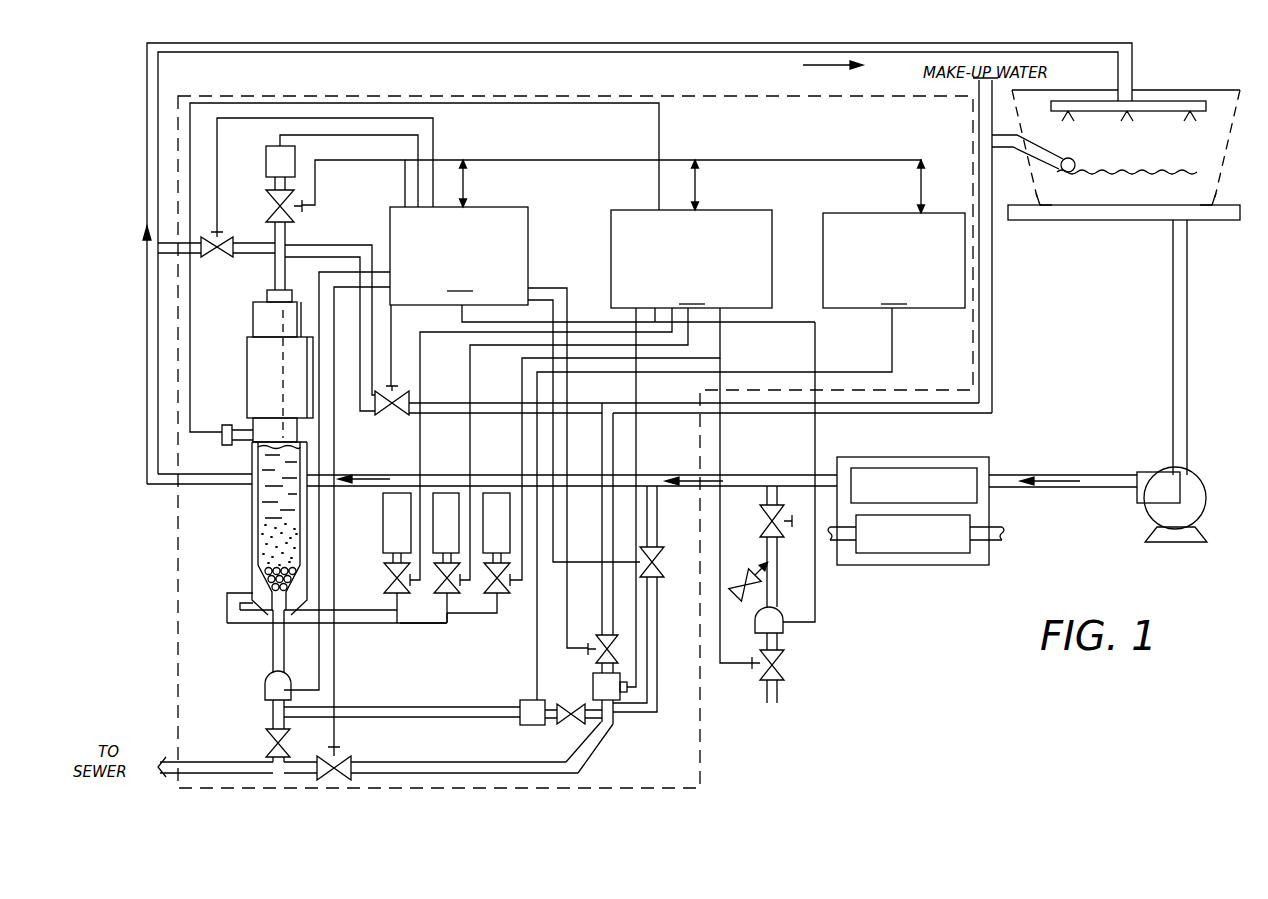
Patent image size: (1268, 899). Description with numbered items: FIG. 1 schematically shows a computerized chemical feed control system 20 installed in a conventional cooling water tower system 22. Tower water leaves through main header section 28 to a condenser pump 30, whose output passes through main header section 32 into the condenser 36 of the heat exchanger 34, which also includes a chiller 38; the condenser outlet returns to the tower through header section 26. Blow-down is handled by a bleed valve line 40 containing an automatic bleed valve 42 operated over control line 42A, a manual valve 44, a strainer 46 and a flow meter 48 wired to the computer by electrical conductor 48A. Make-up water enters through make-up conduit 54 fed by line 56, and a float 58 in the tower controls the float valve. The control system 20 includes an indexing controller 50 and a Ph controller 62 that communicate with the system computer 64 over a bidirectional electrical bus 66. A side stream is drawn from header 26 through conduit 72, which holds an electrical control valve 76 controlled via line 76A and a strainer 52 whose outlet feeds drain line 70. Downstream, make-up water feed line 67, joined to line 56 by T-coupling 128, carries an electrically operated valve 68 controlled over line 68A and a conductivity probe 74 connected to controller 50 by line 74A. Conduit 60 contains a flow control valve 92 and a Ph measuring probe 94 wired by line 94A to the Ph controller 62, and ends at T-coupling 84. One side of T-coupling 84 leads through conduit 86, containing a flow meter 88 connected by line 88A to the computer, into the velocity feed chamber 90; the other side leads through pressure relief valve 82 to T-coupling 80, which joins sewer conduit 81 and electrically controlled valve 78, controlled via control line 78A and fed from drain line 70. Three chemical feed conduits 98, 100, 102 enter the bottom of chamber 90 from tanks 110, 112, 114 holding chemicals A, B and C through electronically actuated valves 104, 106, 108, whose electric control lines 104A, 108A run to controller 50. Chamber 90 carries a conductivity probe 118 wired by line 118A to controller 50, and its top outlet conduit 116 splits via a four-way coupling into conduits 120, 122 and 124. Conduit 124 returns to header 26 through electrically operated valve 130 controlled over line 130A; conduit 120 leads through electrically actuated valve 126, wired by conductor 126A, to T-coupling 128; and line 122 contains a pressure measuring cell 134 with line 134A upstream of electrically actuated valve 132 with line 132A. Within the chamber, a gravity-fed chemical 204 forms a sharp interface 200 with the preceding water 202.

The computerized chemical feed control system 20 is at (826, 137).
The cooling water tower system 22 is at (1175, 96).
The header section 26 is at (724, 54).
The main header section 28 is at (1190, 336).
The condenser pump 30 is at (1200, 506).
The main header section 32 is at (1117, 488).
The heat exchanger 34 is at (915, 456).
The condenser 36 is at (978, 464).
The chiller 38 is at (967, 554).
The bleed valve line 40 is at (761, 521).
The automatic bleed valve 42 is at (768, 704).
The control line 42A is at (734, 664).
The manual valve 44 is at (790, 524).
The strainer 46 is at (760, 566).
The flow meter 48 is at (781, 632).
The electrical conductor 48A is at (816, 616).
The indexing controller 50 is at (691, 259).
The strainer 52 is at (623, 722).
The make-up conduit 54 is at (1052, 160).
The make-up water line 56 is at (993, 270).
The float 58 is at (1076, 167).
The conduit 60 is at (413, 718).
The Ph controller 62 is at (894, 260).
The system computer 64 is at (602, 396).
The bidirectional electrical bus 66 is at (809, 163).
The make-up water feed line 67 is at (600, 535).
The electrically operated valve 68 is at (598, 640).
The control line 68A is at (594, 655).
The drain line 70 is at (599, 757).
The conduit 72 is at (655, 700).
The conductivity probe 74 is at (593, 689).
The line 74A is at (637, 448).
The electrical control valve 76 is at (660, 577).
The line 76A is at (553, 463).
The electrically controlled valve 78 is at (342, 760).
The control line 78A is at (335, 690).
The T-coupling 80 is at (300, 761).
The conduit 81 is at (195, 758).
The pressure relief valve 82 is at (265, 748).
The T-coupling 84 is at (270, 710).
The conduit 86 is at (273, 639).
The flow meter 88 is at (266, 677).
The line 88A is at (320, 652).
The velocity feed chamber 90 is at (257, 352).
The flow control valve 92 is at (557, 728).
The Ph measuring probe 94 is at (515, 718).
The line 94A is at (534, 676).
The chemical feed conduit 98 is at (450, 632).
The chemical feed conduit 100 is at (427, 625).
The chemical feed conduit 102 is at (360, 613).
The electronically actuated valve 104 is at (496, 603).
The electric control line 104A is at (700, 358).
The electronically actuated valve 106 is at (446, 600).
The electronically actuated valve 108 is at (394, 562).
The electric control line 108A is at (660, 326).
The tank 110 is at (497, 493).
The chemical tank 112 is at (447, 493).
The tank 114 is at (387, 510).
The outlet conduit 116 is at (268, 294).
The conductivity probe 118 is at (240, 426).
The line 118A is at (190, 375).
The conduit 120 is at (333, 247).
The conduit 122 is at (289, 230).
The conduit 124 is at (247, 262).
The electrically actuated valve 126 is at (397, 418).
The electrical conductor 126A is at (385, 390).
The T-coupling 128 is at (617, 393).
The electrically operated valve 130 is at (228, 259).
The line 130A is at (216, 126).
The electrically actuated valve 132 is at (268, 218).
The electrical line 132A is at (316, 172).
The pressure measuring cell 134 is at (266, 164).
The electrical line 134A is at (333, 135).
The interface 200 is at (262, 536).
The preceding water 202 is at (262, 502).
The chemical 204 is at (260, 558).